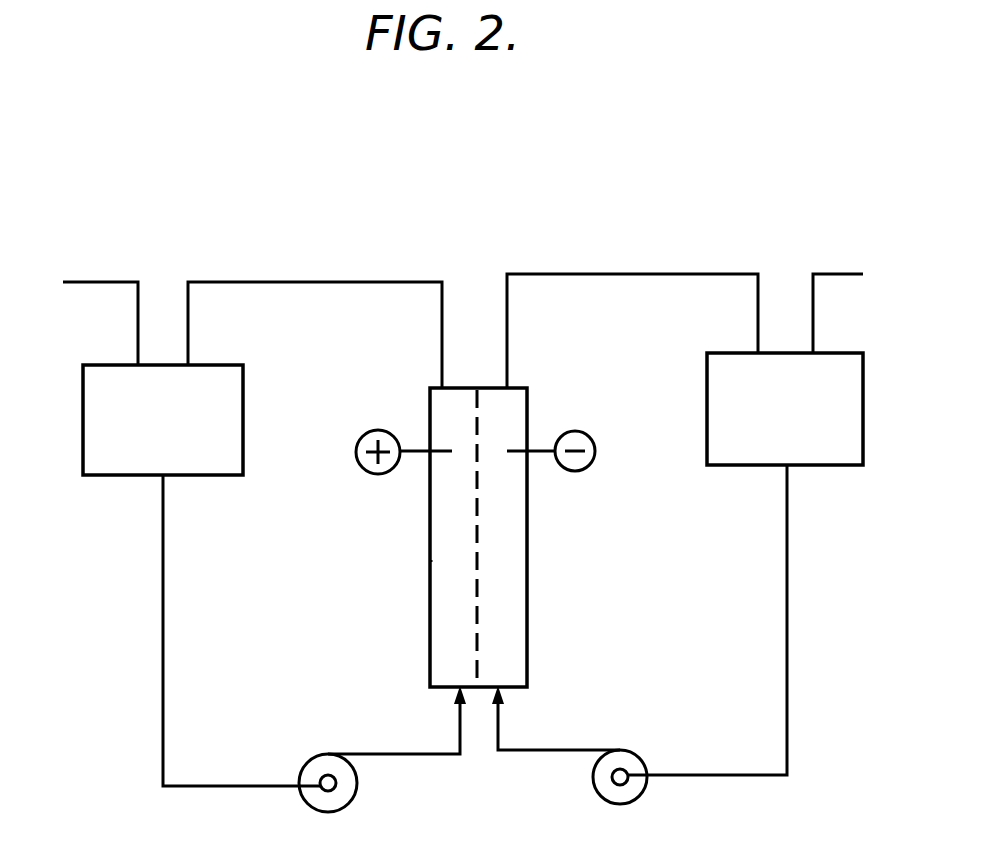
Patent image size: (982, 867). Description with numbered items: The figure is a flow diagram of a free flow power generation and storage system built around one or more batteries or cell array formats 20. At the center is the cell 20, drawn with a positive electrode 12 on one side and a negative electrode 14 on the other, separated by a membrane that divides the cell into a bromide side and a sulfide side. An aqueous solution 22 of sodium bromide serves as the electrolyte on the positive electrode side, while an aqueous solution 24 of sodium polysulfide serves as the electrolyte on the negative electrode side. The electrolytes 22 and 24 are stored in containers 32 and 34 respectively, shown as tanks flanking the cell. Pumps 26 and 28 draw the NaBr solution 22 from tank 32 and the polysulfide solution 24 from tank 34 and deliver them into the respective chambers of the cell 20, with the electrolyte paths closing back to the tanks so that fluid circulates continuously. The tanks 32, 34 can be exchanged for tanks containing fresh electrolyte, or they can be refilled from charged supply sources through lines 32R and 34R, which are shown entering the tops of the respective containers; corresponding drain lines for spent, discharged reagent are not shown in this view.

The positive electrode 12 is at (412, 448).
The negative electrode 14 is at (538, 448).
The cell 20 is at (548, 593).
The aqueous solution of NaBr 22 is at (438, 563).
The aqueous solution of Na2Sx 24 is at (508, 516).
The pump 26 is at (308, 762).
The pump 28 is at (640, 756).
The container 32 is at (160, 436).
The refill line 32R is at (84, 282).
The container 34 is at (786, 425).
The refill line 34R is at (840, 272).